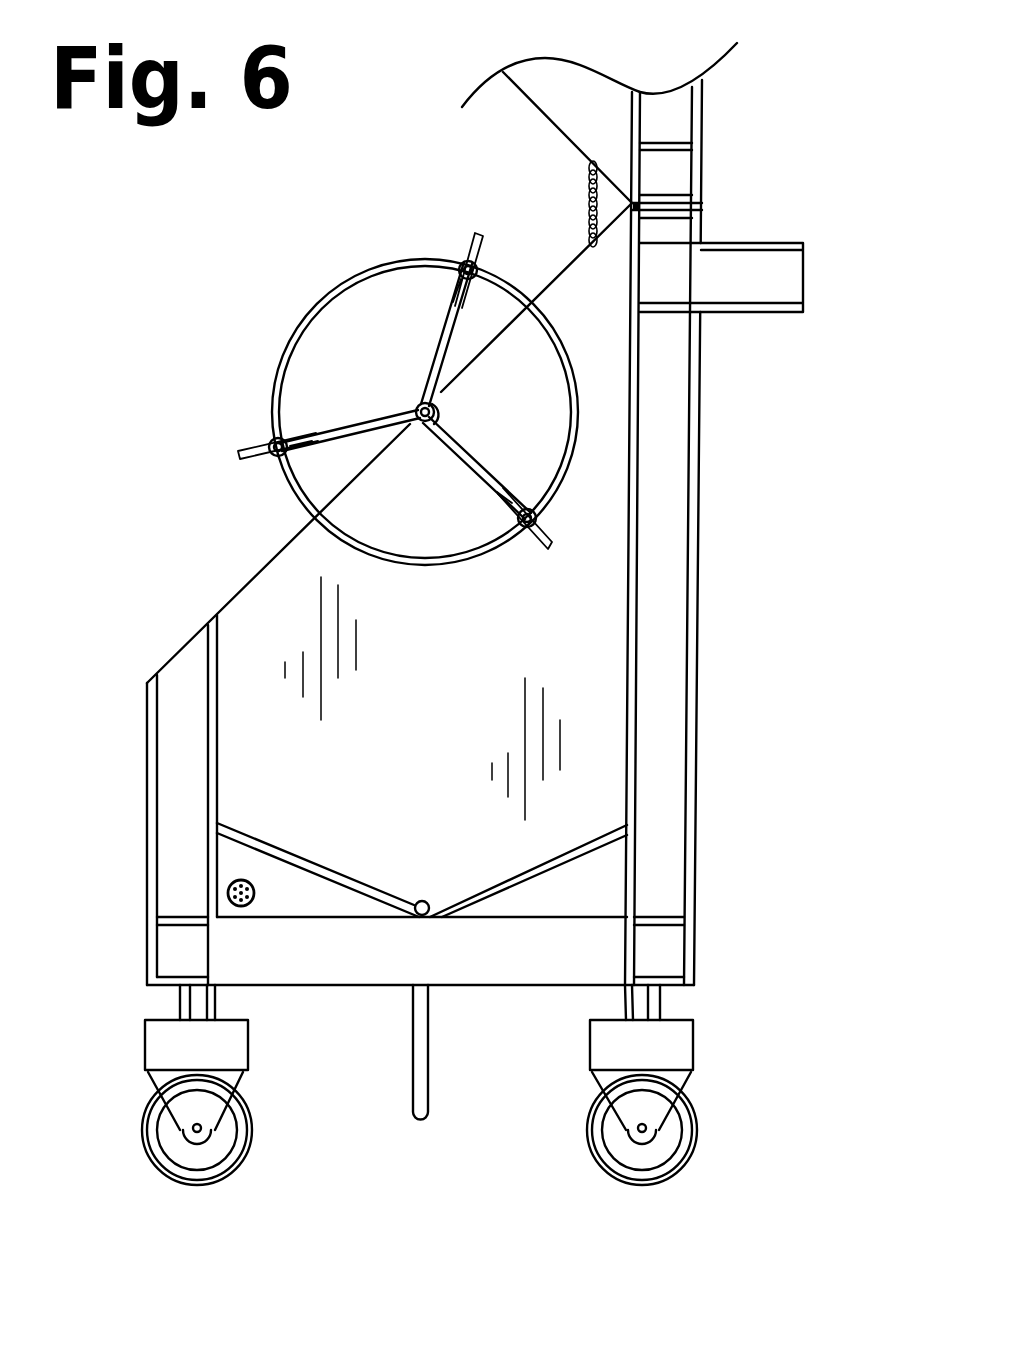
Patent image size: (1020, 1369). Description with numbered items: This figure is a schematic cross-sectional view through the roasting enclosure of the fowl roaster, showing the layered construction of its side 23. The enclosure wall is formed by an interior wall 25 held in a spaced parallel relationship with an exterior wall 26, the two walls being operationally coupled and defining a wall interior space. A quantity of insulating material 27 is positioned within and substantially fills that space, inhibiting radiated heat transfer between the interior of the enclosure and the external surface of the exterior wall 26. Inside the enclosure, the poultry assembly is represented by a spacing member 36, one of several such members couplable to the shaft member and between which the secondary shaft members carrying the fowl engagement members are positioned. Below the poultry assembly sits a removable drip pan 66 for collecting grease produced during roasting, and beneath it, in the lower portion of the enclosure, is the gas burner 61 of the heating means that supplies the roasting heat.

The side 23 is at (407, 832).
The interior wall 25 is at (620, 587).
The exterior wall 26 is at (712, 585).
The insulating material 27 is at (663, 447).
The spacing member 36 is at (276, 380).
The gas burner 61 is at (228, 892).
The drip pan 66 is at (315, 882).